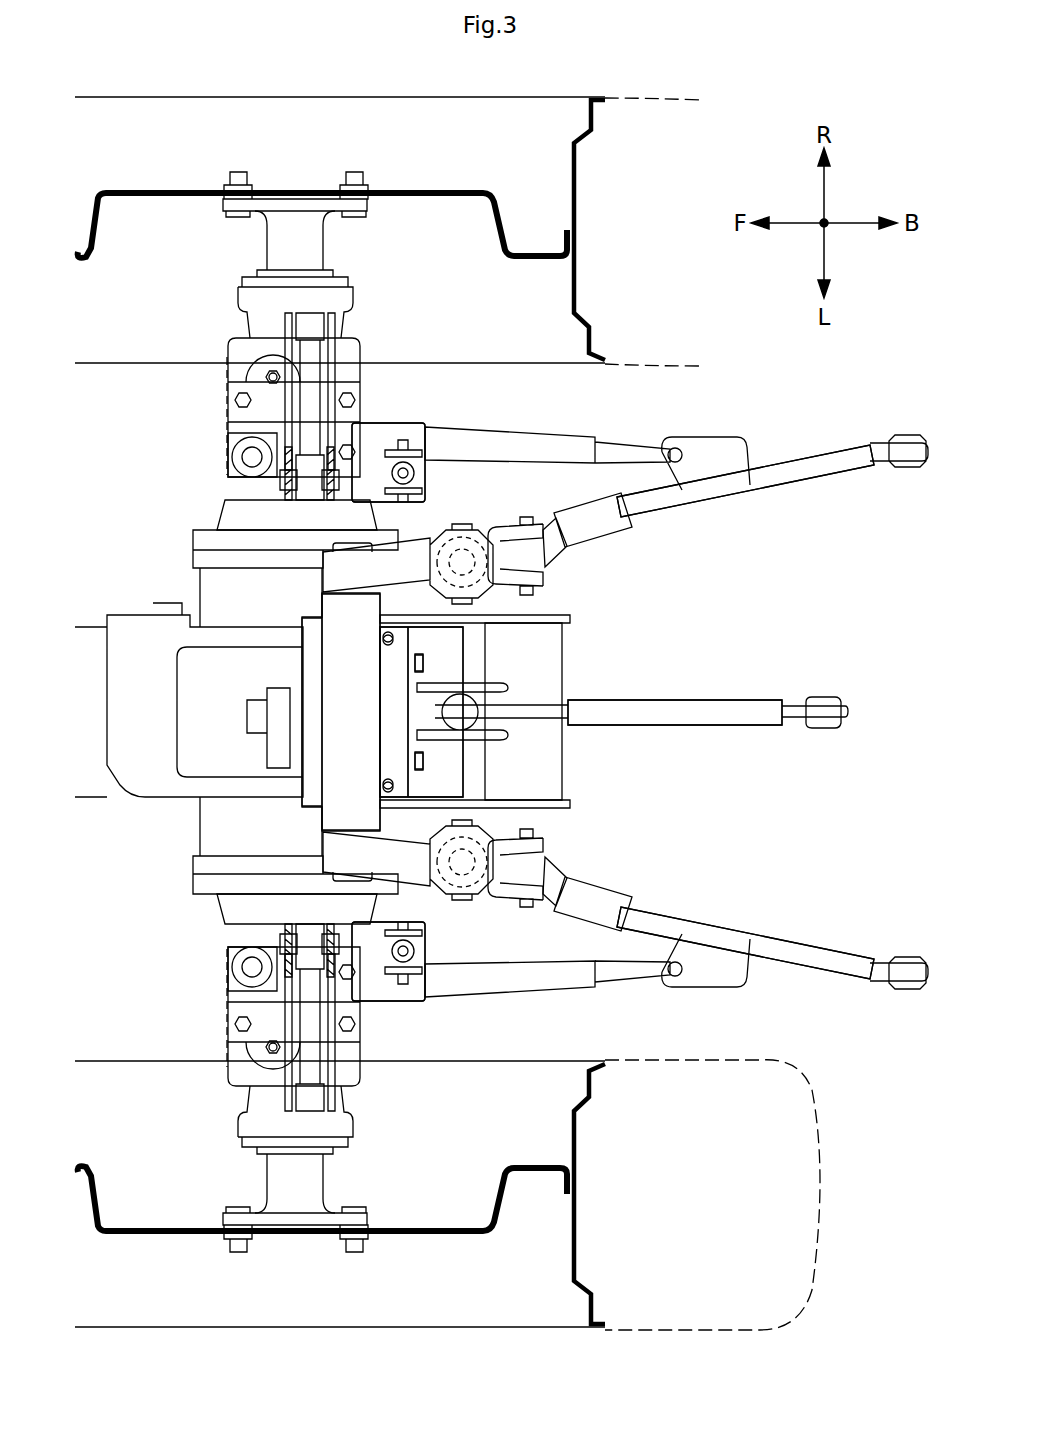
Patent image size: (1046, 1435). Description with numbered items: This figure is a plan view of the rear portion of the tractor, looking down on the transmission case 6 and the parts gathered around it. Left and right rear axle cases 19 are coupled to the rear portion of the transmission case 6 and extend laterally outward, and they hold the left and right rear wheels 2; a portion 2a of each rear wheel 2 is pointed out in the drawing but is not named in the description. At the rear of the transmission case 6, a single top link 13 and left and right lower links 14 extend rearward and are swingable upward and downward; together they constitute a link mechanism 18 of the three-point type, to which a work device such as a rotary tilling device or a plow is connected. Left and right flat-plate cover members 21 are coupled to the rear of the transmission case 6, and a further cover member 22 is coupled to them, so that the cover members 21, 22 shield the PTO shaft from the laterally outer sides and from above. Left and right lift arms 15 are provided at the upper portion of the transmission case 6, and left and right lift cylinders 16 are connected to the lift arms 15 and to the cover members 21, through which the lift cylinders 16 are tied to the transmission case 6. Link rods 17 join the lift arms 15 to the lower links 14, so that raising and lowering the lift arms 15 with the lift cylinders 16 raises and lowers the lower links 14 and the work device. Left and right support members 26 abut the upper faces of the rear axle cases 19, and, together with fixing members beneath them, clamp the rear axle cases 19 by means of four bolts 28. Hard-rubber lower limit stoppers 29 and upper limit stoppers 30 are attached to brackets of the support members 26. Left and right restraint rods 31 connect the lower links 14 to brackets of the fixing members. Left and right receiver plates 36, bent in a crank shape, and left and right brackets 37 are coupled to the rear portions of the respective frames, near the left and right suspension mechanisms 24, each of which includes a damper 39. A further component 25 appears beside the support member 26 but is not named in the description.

The rear wheel 2 is at (650, 97).
The wheel rim flange 2a is at (455, 186).
The transmission case 6 is at (150, 668).
The top link 13 is at (690, 705).
The lower link 14 is at (808, 462).
The lift arm 15 is at (410, 555).
The lift cylinder 16 is at (505, 540).
The link rod 17 is at (566, 540).
The link mechanism 18 is at (746, 715).
The rear axle case 19 is at (240, 510).
The cover member 21 is at (585, 623).
The cover member 22 is at (555, 758).
The suspension mechanism 24 is at (451, 726).
The link plate 25 is at (316, 385).
The support member 26 is at (370, 333).
The bolt 28 is at (237, 404).
The lower limit stopper 29 is at (240, 460).
The upper limit stopper 30 is at (262, 372).
The restraint rod 31 is at (552, 438).
The receiver plate 36 is at (225, 390).
The bracket 37 is at (330, 500).
The damper 39 is at (406, 474).